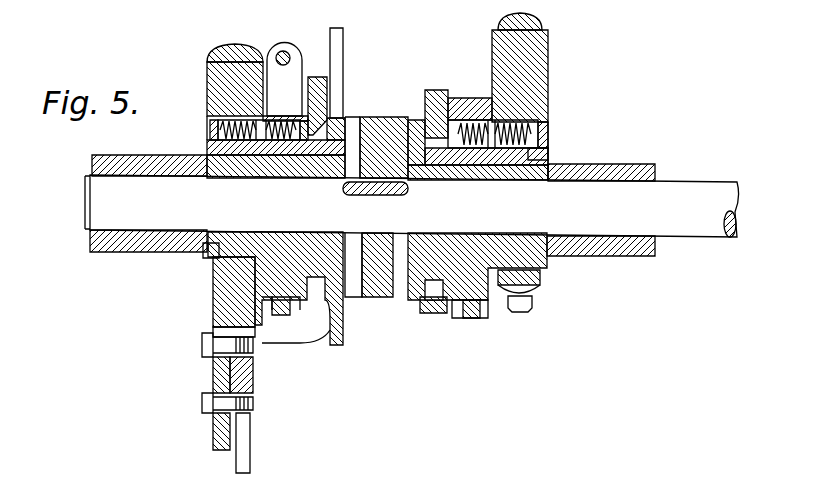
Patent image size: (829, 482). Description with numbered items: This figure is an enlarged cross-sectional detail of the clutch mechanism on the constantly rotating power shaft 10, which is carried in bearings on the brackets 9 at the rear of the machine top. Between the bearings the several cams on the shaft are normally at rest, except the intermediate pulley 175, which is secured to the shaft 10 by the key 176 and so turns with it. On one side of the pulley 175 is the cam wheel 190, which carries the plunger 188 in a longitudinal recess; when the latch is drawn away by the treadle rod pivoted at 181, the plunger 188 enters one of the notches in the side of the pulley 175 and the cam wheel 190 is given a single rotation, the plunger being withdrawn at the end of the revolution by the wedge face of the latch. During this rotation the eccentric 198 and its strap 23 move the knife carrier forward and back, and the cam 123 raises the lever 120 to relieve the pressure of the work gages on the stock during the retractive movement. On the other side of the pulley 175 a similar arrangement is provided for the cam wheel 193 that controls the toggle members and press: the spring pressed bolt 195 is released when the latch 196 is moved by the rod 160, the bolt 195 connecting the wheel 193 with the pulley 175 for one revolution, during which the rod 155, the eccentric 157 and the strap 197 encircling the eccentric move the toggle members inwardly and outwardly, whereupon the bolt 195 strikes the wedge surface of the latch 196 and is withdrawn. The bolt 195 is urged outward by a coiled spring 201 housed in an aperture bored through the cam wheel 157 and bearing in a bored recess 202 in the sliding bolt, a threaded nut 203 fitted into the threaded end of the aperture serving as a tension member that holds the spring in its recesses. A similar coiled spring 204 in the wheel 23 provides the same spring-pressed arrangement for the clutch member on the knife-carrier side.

The brackets 9 is at (127, 157).
The power shaft 10 is at (722, 188).
The eccentric strap 23 is at (230, 47).
The lever 120 is at (340, 29).
The cam 123 is at (345, 336).
The rod 155 is at (245, 450).
The eccentric 157 is at (533, 87).
The rod 160 is at (474, 320).
The intermediate pulley 175 is at (385, 118).
The key 176 is at (393, 196).
The pivot 181 is at (319, 77).
The plunger 188 is at (357, 116).
The cam wheel 190 is at (207, 250).
The cam wheel 193 is at (547, 264).
The spring pressed bolt 195 is at (527, 160).
The latch 196 is at (447, 100).
The strap 197 is at (530, 18).
The eccentric 198 is at (207, 88).
The coiled spring 201 is at (547, 155).
The bored recess 202 is at (471, 100).
The threaded nut 203 is at (547, 130).
The coiled spring 204 is at (210, 108).